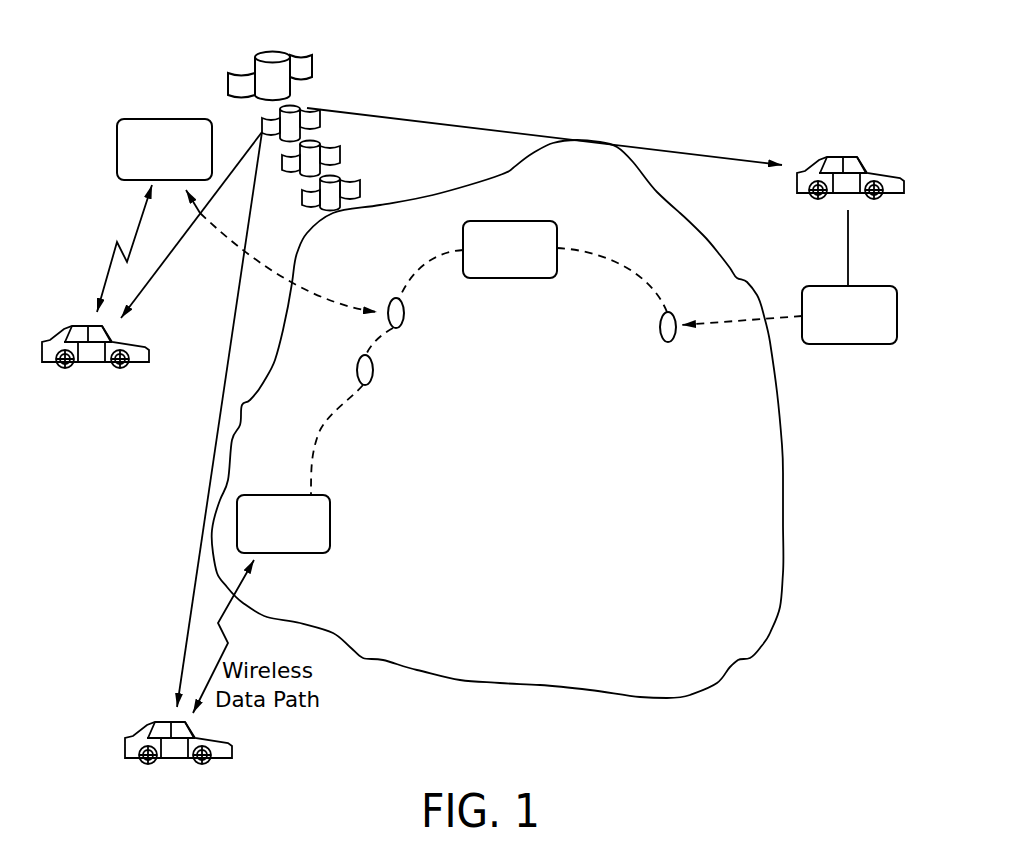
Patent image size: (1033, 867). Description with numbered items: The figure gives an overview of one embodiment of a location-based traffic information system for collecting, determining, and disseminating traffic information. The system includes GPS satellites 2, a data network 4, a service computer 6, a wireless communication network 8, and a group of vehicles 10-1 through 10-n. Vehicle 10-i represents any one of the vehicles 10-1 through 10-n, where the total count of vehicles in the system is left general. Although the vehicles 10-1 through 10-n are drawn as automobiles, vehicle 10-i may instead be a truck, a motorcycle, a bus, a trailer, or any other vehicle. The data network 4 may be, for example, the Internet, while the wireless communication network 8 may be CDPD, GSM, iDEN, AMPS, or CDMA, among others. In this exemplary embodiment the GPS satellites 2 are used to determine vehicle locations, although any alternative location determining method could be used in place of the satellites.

The GPS satellites 2 is at (318, 38).
The data network 4 is at (510, 687).
The service computer 6 is at (510, 249).
The wireless communication network 8 is at (507, 336).
The vehicle 10-1 is at (70, 322).
The vehicle 10-i is at (152, 718).
The vehicle 10-n is at (822, 157).